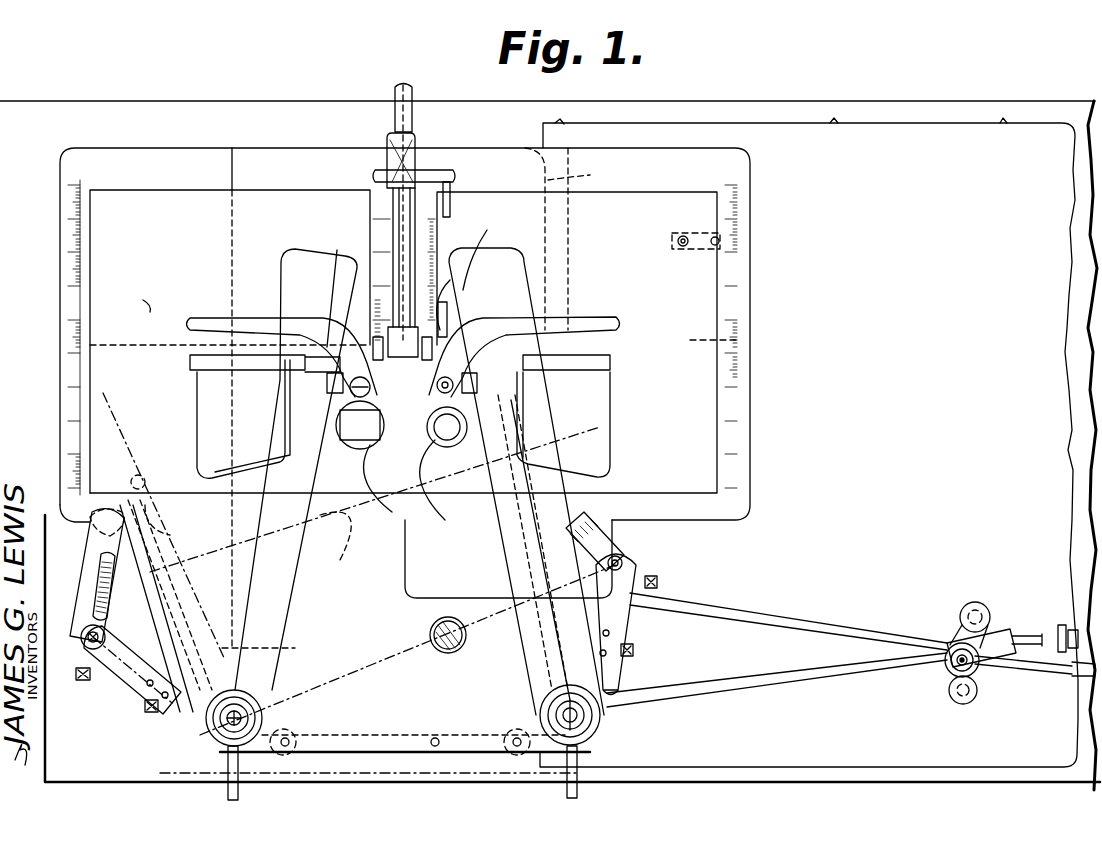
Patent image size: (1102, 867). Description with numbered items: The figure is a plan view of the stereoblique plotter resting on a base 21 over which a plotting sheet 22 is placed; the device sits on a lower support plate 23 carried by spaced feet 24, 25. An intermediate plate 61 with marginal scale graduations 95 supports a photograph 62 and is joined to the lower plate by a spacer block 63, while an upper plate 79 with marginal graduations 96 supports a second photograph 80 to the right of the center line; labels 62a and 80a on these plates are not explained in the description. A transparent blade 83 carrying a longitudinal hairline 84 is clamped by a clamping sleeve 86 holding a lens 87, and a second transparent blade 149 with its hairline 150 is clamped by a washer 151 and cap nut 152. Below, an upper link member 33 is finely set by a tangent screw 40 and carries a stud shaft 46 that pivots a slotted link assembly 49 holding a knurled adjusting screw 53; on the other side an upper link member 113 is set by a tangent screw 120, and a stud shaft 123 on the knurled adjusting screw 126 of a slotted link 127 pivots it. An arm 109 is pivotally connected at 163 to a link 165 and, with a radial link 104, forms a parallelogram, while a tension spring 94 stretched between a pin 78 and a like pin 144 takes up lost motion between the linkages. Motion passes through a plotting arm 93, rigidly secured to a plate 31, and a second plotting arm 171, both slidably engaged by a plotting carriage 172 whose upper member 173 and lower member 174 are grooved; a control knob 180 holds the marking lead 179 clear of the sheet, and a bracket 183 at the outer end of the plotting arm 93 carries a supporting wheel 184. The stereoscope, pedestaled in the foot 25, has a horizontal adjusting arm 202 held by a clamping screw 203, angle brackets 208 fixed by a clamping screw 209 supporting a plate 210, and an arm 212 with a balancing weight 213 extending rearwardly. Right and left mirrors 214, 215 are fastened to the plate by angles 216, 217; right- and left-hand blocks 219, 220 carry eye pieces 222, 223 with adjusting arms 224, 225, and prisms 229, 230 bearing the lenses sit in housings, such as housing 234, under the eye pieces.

The base 21 is at (163, 100).
The plotting sheet 22 is at (807, 128).
The lower support plate 23 is at (134, 298).
The feet 24 is at (287, 752).
The foot 25 is at (415, 165).
The plate 31 is at (627, 677).
The upper link member 33 is at (617, 618).
The tangent screw 40 is at (634, 650).
The stud shaft 46 is at (623, 563).
The slotted link assembly 49 is at (593, 537).
The knurled adjusting screw 53 is at (647, 582).
The intermediate plate 61 is at (72, 150).
The photograph 62 is at (152, 202).
The scale index line 62a is at (156, 340).
The spacer block 63 is at (378, 735).
The radially extending pin 78 is at (577, 760).
The upper plate 79 is at (413, 580).
The photograph 80 is at (672, 198).
The scale index line 80a is at (712, 347).
The transparent blade 83 is at (507, 278).
The longitudinal hairline 84 is at (483, 273).
The clamping sleeve 86 is at (607, 718).
The lens 87 is at (578, 720).
The plotting arm 93 is at (717, 680).
The tension spring 94 is at (433, 775).
The marginal scale graduations 95 is at (80, 325).
The marginal graduations 96 is at (530, 317).
The radial link 104 is at (385, 670).
The arm 109 is at (274, 659).
The upper link member 113 is at (128, 670).
The tangent screw 120 is at (147, 683).
The stud shaft 123 is at (83, 623).
The knurled adjusting screw 126 is at (80, 678).
The slotted link 127 is at (107, 566).
The pin 144 is at (230, 768).
The transparent blade 149 is at (285, 262).
The longitudinal hairline 150 is at (320, 267).
The washer 151 is at (255, 720).
The cap nut 152 is at (217, 713).
The pivotal connection 163 is at (176, 545).
The link 165 is at (367, 597).
The plotting arm 171 is at (770, 620).
The plotting carriage 172 is at (950, 633).
The upper member 173 is at (997, 642).
The lower member 174 is at (1013, 675).
The marking lead 179 is at (957, 677).
The control knob 180 is at (950, 660).
The bracket 183 is at (1070, 623).
The supporting wheel 184 is at (1067, 593).
The horizontal adjusting arm 202 is at (395, 95).
The clamping screw 203 is at (445, 175).
The angle brackets 208 is at (428, 496).
The clamping screw 209 is at (450, 275).
The plate 210 is at (327, 385).
The arm 212 is at (400, 215).
The balancing weight 213 is at (400, 150).
The right mirror 214 is at (610, 440).
The left mirror 215 is at (207, 410).
The angle 216 is at (612, 357).
The angle 217 is at (207, 362).
The right-hand block 219 is at (460, 387).
The left-hand block 220 is at (360, 423).
The eye piece 222 is at (440, 495).
The eye piece 223 is at (413, 507).
The adjusting arm 224 is at (629, 308).
The adjusting arm 225 is at (220, 318).
The prism 229 is at (603, 470).
The prism 230 is at (338, 448).
The housing 234 is at (365, 568).